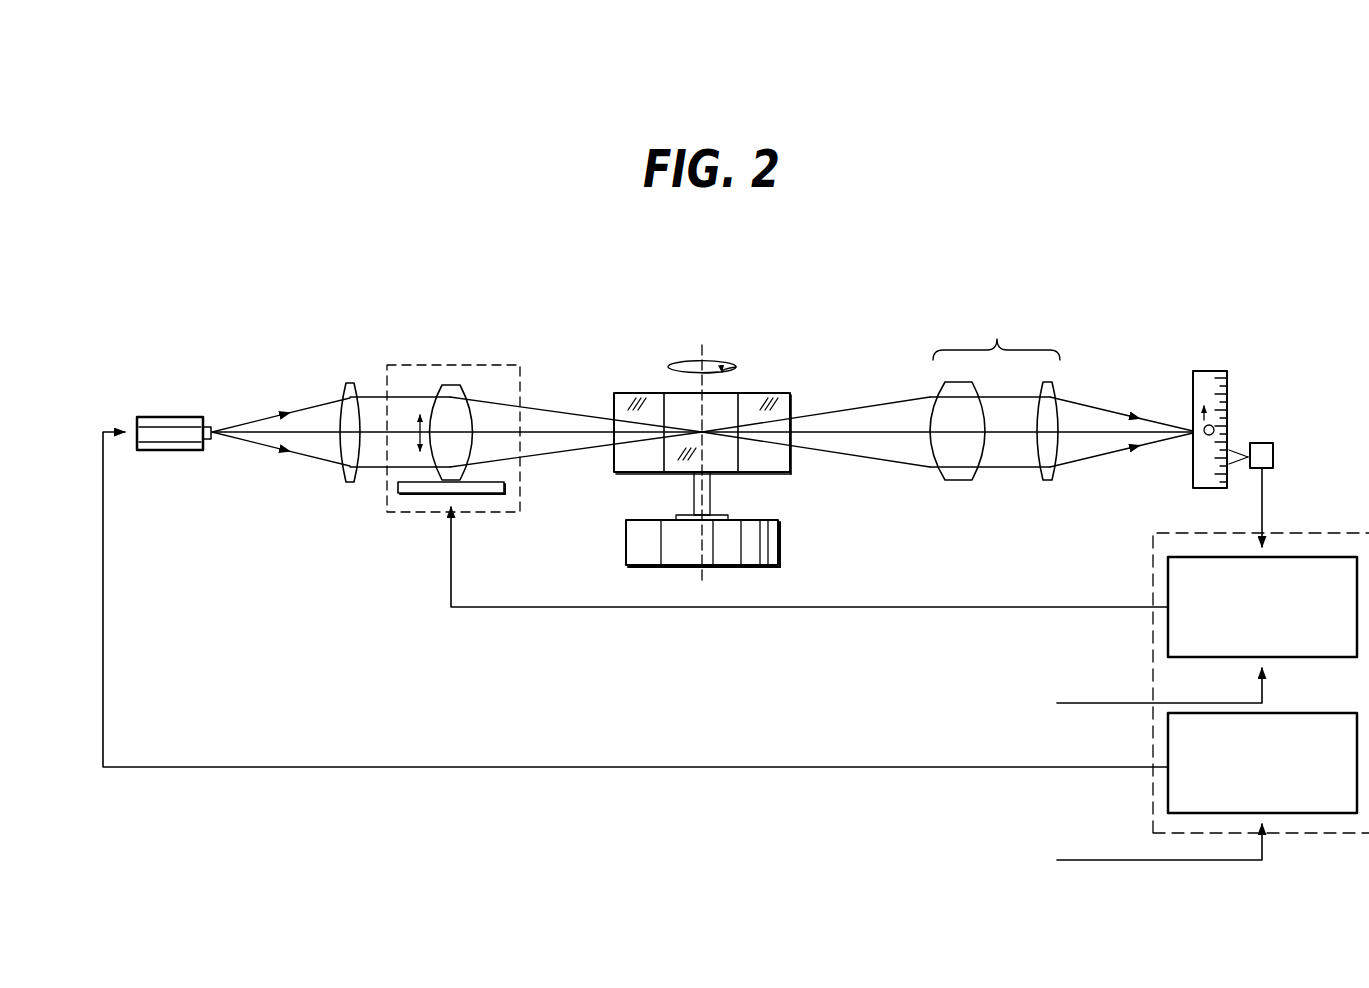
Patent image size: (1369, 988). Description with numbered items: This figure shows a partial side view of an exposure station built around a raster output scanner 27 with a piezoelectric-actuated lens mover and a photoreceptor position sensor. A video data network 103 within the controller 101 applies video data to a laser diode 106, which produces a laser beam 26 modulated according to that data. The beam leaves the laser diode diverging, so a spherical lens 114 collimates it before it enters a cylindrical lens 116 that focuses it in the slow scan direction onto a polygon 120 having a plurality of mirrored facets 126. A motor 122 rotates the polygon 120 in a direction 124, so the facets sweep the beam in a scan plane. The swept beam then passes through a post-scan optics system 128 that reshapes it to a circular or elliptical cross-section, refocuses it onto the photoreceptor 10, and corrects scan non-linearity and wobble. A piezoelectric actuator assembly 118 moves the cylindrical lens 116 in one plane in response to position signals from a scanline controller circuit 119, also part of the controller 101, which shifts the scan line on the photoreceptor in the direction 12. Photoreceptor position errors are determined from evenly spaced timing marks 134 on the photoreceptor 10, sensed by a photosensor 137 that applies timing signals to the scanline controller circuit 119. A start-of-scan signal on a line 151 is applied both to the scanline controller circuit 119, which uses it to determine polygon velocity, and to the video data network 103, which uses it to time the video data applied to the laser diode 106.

The raster output scanner 27 is at (608, 294).
The laser beam 26 is at (283, 413).
The laser diode 106 is at (170, 452).
The spherical lens 114 is at (349, 484).
The cylindrical lens 116 is at (449, 383).
The piezoelectric actuator assembly 118 is at (424, 514).
The polygon 120 is at (774, 474).
The motor 122 is at (625, 542).
The direction of rotation 124 is at (719, 357).
The mirrored facets 126 is at (722, 400).
The post-scan optics system 128 is at (1013, 336).
The photoreceptor 10 is at (1204, 490).
The direction 12 is at (1204, 425).
The timing marks 134 is at (1222, 387).
The photosensor 137 is at (1275, 455).
The controller 101 is at (1151, 565).
The scanline controller circuit 119 is at (1223, 659).
The video data network 103 is at (1283, 713).
The line 151 is at (1133, 702).